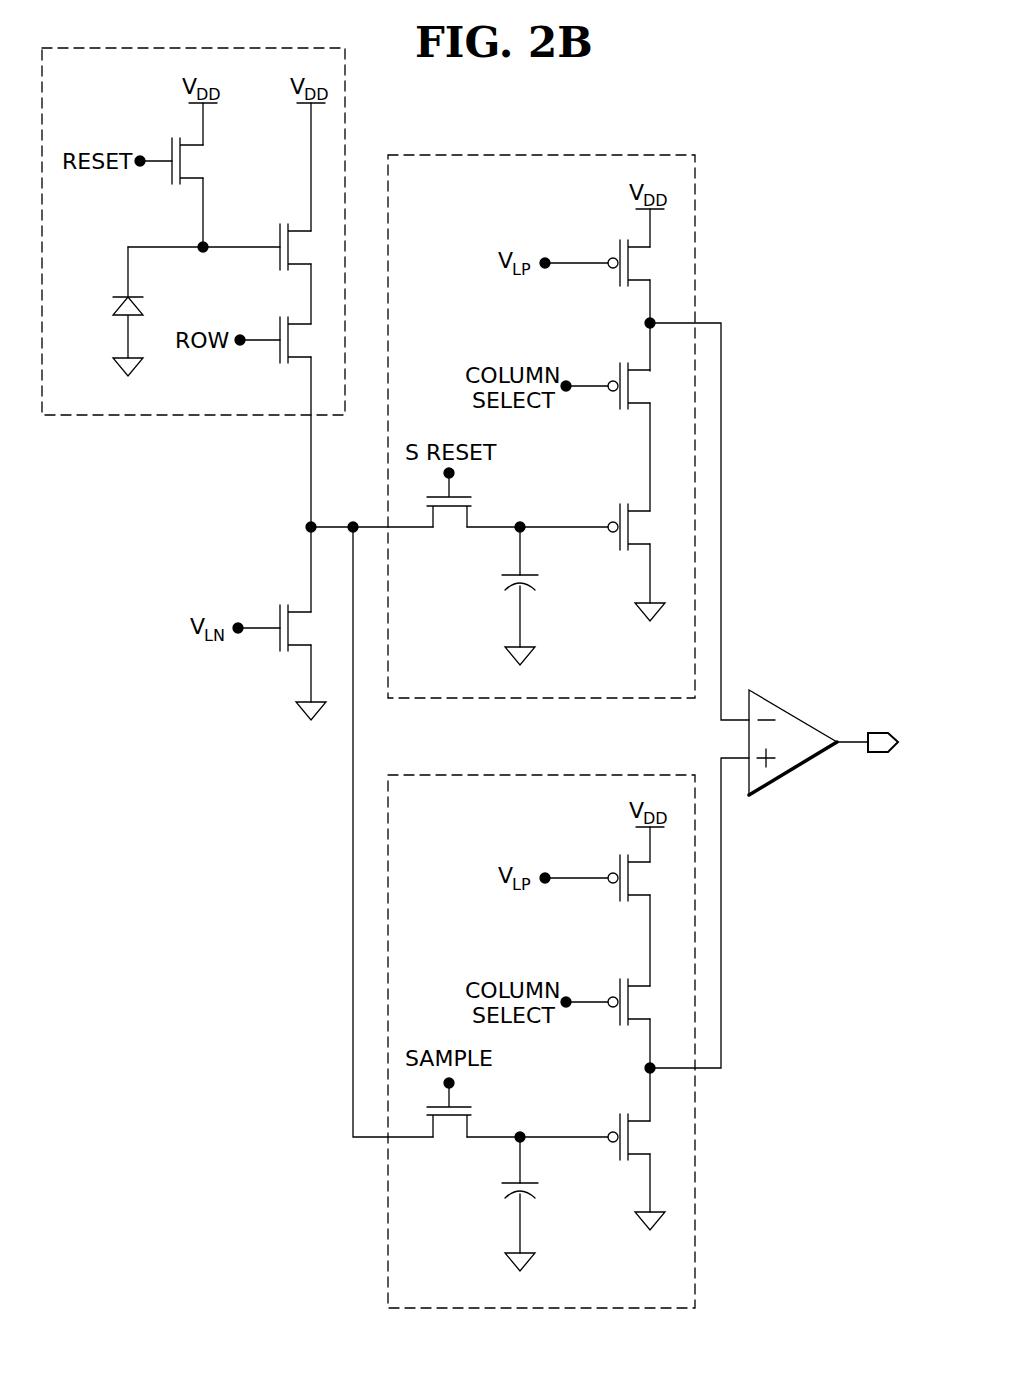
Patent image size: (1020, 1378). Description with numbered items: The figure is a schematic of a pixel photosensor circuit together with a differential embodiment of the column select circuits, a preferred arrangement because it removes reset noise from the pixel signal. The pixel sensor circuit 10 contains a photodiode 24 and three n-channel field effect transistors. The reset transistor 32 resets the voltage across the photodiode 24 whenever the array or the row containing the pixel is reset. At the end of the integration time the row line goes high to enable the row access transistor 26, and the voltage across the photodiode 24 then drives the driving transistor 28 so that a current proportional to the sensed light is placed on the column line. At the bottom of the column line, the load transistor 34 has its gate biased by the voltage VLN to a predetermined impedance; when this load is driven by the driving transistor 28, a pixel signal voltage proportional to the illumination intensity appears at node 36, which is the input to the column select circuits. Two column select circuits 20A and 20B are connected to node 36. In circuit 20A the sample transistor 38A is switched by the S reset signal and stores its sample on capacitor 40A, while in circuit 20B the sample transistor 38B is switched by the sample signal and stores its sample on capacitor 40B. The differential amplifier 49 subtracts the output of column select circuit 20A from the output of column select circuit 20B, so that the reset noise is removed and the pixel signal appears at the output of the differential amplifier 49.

The pixel sensor circuit 10 is at (276, 48).
The reset transistor 32 is at (172, 140).
The driving transistor 28 is at (281, 224).
The row access transistor 26 is at (281, 318).
The photodiode 24 is at (118, 312).
The node 36 is at (306, 530).
The load transistor 34 is at (280, 655).
The column select circuit 20A is at (532, 155).
The sample transistor 38A is at (450, 528).
The capacitor 40A is at (540, 586).
The differential amplifier 49 is at (797, 772).
The column select circuit 20B is at (697, 1155).
The sample transistor 38B is at (450, 1138).
The capacitor 40B is at (540, 1194).